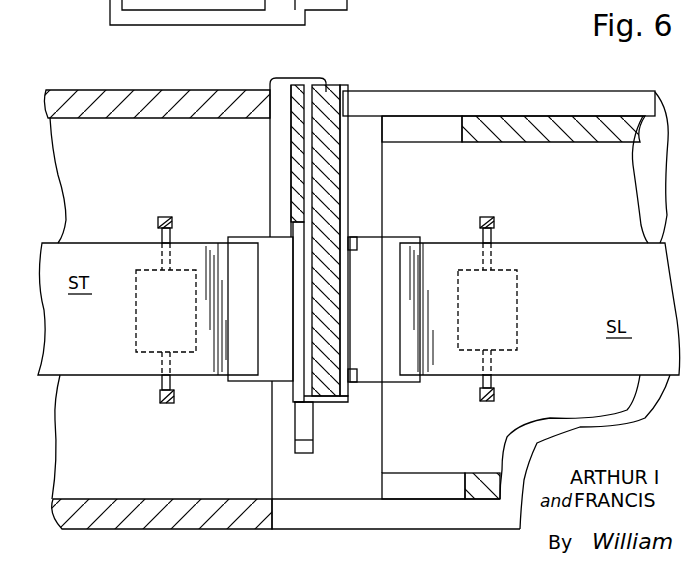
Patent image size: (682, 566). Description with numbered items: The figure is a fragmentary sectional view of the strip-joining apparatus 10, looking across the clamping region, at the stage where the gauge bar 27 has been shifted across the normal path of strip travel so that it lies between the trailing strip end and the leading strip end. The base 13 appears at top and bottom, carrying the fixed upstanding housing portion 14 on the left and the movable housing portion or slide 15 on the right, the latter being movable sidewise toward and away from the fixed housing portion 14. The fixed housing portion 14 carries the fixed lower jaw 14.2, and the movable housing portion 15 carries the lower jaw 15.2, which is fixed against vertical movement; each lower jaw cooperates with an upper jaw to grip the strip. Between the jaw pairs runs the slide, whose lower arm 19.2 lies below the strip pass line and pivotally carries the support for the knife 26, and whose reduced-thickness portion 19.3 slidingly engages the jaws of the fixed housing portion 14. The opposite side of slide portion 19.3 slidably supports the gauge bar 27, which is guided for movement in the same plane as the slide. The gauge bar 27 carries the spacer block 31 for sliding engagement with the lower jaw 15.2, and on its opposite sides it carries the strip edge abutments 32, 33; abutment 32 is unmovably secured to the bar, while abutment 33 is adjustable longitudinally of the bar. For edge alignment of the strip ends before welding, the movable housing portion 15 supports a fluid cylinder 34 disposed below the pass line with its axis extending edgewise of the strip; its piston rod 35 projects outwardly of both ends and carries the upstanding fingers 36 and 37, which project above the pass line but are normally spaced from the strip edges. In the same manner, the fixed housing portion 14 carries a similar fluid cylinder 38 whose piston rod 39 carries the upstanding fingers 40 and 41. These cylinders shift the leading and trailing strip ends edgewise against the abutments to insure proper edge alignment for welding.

The apparatus 10 is at (466, 50).
The base 13 is at (381, 88).
The fixed housing portion 14 is at (110, 88).
The housing portion or slide 15 is at (487, 471).
The lower arm 19.2 is at (283, 84).
The reduced-thickness portion of slide 19.3 is at (297, 160).
The strip edge abutment 32 is at (303, 232).
The gauge bar 27 is at (328, 389).
The strip edge abutment 33 is at (346, 236).
The spacer block 31 is at (353, 241).
The knife 26 is at (300, 451).
The fixed lower jaw 14.2 is at (292, 286).
The lower jaw 15.2 is at (392, 326).
The fluid cylinder 38 is at (150, 313).
The fluid cylinder 34 is at (512, 305).
The upstanding finger 40 is at (159, 219).
The piston rod 39 is at (173, 239).
The upstanding finger 41 is at (170, 404).
The upstanding finger 36 is at (484, 218).
The piston rod 35 is at (494, 231).
The upstanding finger 37 is at (485, 402).